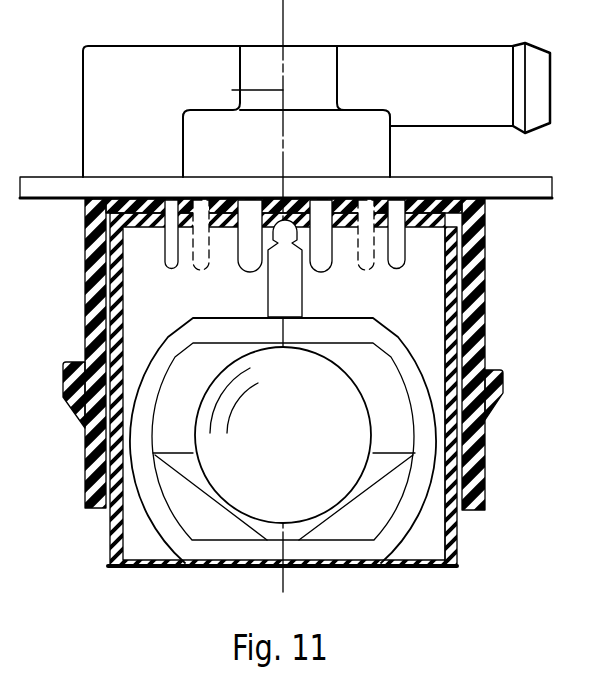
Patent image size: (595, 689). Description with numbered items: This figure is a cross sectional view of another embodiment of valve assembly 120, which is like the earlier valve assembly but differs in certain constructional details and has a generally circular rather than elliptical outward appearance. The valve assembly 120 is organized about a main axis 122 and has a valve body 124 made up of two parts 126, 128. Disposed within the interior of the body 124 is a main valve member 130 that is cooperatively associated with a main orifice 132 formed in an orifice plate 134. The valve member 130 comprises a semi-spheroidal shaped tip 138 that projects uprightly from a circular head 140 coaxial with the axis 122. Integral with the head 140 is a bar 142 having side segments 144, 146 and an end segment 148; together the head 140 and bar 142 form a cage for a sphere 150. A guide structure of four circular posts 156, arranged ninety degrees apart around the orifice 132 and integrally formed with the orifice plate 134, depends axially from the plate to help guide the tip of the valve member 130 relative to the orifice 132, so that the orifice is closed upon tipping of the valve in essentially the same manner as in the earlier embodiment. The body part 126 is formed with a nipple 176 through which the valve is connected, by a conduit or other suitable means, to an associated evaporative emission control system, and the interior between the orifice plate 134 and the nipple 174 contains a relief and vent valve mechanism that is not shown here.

The valve assembly 120 is at (481, 513).
The main axis 122 is at (232, 90).
The valve body 124 is at (488, 226).
The body part 126 is at (487, 257).
The body part 128 is at (486, 285).
The main valve member 130 is at (302, 303).
The main orifice 132 is at (262, 232).
The orifice plate 134 is at (387, 203).
The semi-spheroidal shaped tip 138 is at (318, 203).
The circular head 140 is at (365, 320).
The bar 142 is at (173, 327).
The side segment 144 is at (162, 343).
The side segment 146 is at (480, 360).
The end segment 148 is at (342, 553).
The sphere 150 is at (325, 413).
The circular posts 156 is at (245, 272).
The nipple 174 is at (462, 203).
The nipple 176 is at (370, 46).